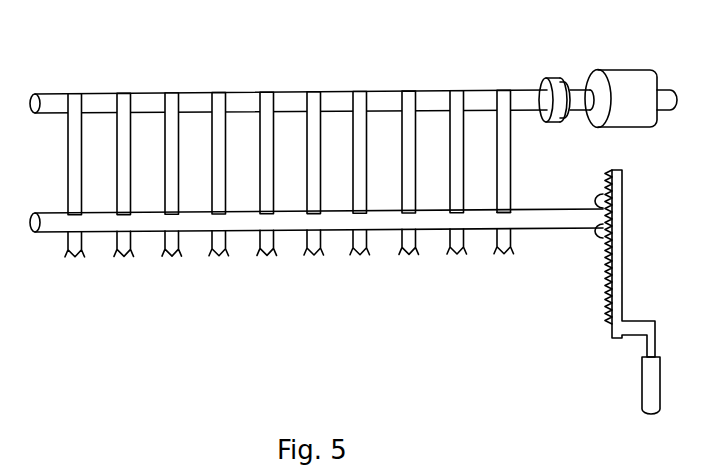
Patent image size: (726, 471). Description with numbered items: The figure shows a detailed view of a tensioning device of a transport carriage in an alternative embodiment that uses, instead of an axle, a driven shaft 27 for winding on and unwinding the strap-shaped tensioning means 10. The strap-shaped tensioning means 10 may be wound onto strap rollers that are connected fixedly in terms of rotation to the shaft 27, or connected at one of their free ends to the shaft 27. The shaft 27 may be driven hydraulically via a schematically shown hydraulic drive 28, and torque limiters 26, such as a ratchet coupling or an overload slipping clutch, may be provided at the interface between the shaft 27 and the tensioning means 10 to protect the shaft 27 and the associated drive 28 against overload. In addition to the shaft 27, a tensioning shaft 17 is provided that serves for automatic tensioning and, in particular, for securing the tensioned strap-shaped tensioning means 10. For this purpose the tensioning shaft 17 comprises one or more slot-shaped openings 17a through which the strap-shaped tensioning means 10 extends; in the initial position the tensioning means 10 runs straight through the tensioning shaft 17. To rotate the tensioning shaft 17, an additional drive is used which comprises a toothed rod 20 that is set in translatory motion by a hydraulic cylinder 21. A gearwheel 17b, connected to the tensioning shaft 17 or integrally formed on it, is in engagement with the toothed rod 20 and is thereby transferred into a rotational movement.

The driven shaft 27 is at (246, 92).
The strap-shaped tensioning means 10 is at (511, 140).
The tensioning shaft 17 is at (537, 221).
The slot-shaped opening 17a is at (497, 207).
The gearwheel 17b is at (591, 197).
The torque limiter 26 is at (551, 77).
The hydraulic drive 28 is at (622, 80).
The toothed rod 20 is at (617, 272).
The hydraulic cylinder 21 is at (655, 385).